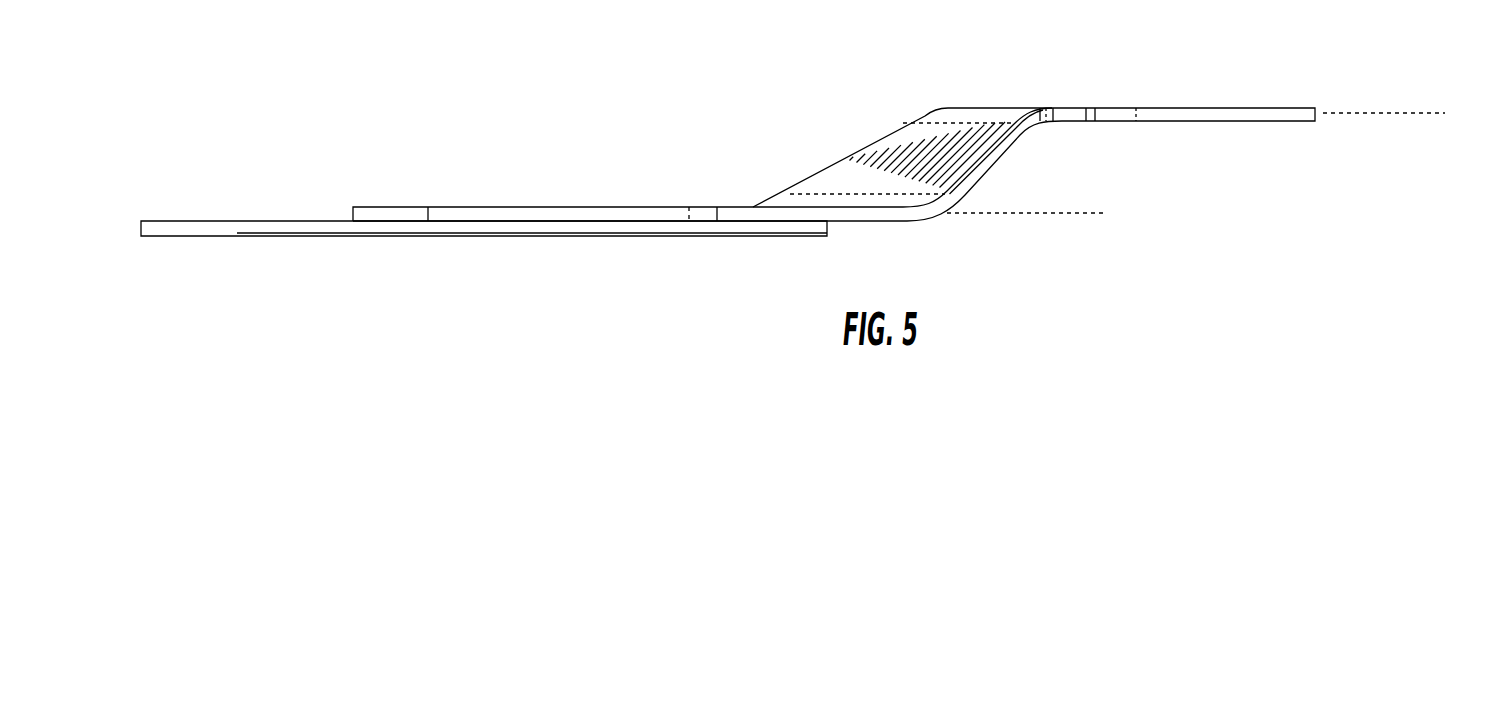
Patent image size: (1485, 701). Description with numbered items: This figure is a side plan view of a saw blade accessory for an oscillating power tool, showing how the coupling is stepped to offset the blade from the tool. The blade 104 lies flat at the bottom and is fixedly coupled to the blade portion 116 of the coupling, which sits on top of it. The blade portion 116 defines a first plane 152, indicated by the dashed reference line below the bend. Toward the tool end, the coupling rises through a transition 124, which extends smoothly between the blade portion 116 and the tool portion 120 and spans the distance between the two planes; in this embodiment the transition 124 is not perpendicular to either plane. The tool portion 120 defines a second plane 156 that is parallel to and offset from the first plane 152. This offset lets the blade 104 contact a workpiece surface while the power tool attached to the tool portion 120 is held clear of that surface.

The blade 104 is at (257, 217).
The blade portion 116 is at (558, 215).
The tool portion 120 is at (1190, 118).
The transition 124 is at (993, 165).
The first plane 152 is at (1047, 213).
The second plane 156 is at (1365, 110).